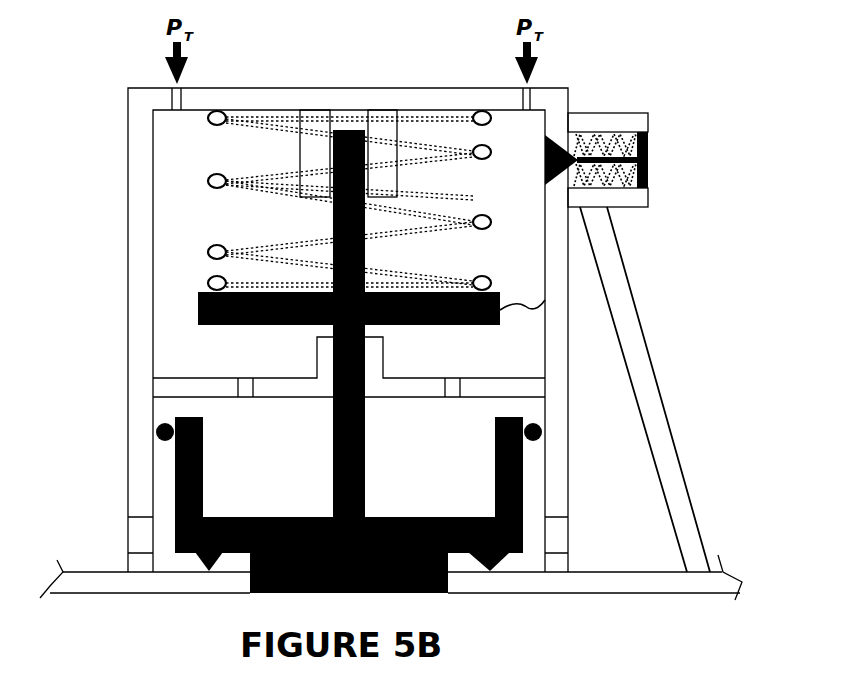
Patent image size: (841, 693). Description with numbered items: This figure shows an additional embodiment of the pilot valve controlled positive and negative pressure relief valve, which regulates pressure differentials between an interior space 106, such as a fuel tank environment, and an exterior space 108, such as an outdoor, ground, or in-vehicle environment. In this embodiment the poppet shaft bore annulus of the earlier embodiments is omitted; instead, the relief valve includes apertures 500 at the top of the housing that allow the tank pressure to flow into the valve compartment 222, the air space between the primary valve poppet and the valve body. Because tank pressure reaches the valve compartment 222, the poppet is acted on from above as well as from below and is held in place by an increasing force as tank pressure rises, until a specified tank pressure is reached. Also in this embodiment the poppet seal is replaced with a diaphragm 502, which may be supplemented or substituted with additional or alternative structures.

The apertures 500 is at (190, 72).
The valve compartment 222 is at (528, 128).
The interior space 106 is at (627, 322).
The exterior space 108 is at (391, 594).
The diaphragm 502 is at (198, 303).